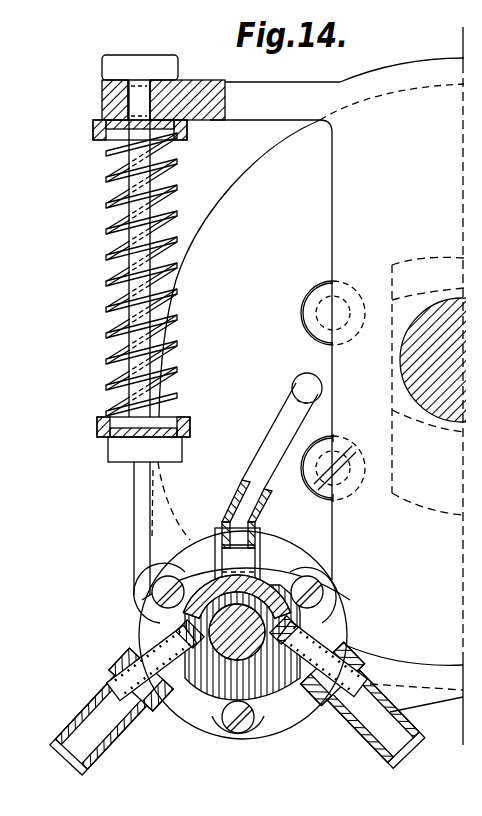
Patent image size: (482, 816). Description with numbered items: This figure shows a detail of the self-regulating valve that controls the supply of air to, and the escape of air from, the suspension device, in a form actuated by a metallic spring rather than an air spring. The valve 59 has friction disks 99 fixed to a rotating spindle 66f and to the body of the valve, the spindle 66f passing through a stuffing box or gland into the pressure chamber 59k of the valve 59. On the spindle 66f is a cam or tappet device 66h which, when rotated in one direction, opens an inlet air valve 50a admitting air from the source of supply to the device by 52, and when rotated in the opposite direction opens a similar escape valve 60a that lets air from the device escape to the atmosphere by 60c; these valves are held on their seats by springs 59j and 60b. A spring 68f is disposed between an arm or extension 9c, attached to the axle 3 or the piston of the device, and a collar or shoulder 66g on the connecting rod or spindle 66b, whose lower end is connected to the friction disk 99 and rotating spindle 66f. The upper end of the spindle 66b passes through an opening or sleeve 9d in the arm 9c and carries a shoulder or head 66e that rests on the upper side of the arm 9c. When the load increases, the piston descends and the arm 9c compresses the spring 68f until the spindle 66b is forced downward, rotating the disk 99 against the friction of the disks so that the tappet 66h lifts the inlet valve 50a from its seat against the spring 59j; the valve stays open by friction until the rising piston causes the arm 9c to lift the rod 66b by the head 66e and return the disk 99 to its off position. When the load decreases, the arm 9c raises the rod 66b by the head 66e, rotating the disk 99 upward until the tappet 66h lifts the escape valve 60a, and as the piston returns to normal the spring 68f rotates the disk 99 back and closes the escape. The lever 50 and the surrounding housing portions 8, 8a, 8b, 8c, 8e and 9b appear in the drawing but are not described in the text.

The axle 3 is at (458, 420).
The housing 8 is at (392, 466).
The housing bore 8a is at (401, 416).
The screws 8b is at (307, 331).
The housing wall 8c is at (239, 330).
The housing portion 8e is at (428, 497).
The cover wall 9b is at (425, 386).
The arm or extension 9c is at (337, 319).
The opening or sleeve 9d is at (102, 106).
The control lever 50 is at (297, 387).
The inlet air valve 50a is at (180, 634).
The air supply connection 52 is at (393, 727).
The valve 59 is at (210, 685).
The spring 59j is at (138, 660).
The pressure chamber 59k is at (215, 576).
The escape valve 60a is at (295, 627).
The spring 60b is at (318, 654).
The escape outlet 60c is at (100, 724).
The connecting rod or spindle 66b is at (140, 498).
The shoulder or head 66e is at (123, 63).
The rotating spindle 66f is at (264, 716).
The collar or shoulder 66g is at (108, 452).
The cam or tappet device 66h is at (256, 582).
The spring 68f is at (177, 185).
The friction disks 99 is at (281, 544).